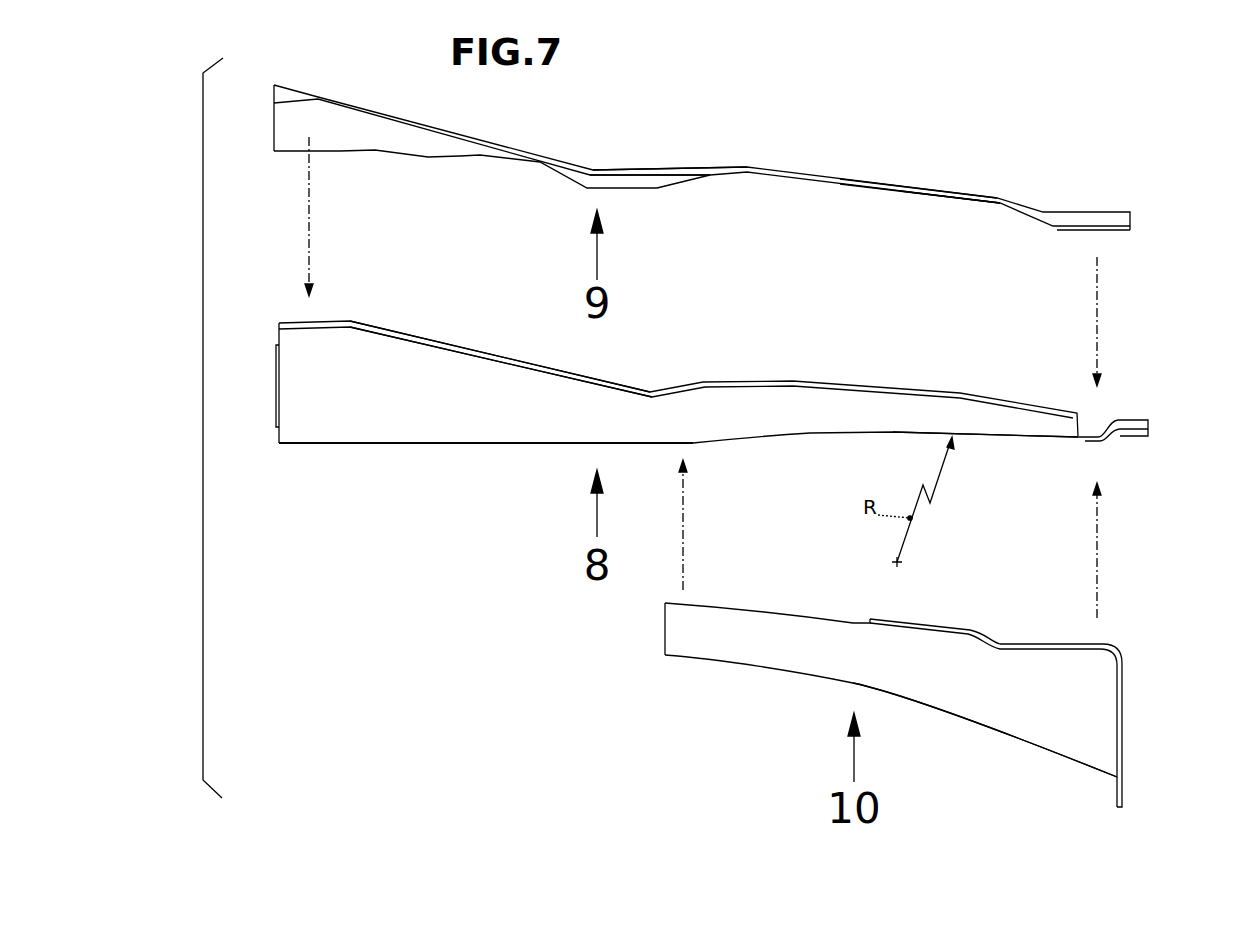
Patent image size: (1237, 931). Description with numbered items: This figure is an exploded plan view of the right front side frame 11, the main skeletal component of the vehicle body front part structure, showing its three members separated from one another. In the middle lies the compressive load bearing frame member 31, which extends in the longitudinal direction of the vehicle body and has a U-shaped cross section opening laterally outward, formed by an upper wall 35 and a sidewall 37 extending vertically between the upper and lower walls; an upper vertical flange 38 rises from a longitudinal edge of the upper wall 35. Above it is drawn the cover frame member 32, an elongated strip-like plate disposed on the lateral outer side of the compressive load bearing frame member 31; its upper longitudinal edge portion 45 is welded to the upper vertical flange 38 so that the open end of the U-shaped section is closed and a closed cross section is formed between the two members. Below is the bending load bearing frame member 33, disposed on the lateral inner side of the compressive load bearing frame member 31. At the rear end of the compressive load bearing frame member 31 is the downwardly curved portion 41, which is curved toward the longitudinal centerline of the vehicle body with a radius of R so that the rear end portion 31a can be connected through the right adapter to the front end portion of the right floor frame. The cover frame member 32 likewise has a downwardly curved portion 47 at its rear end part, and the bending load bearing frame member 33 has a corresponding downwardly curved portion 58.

The right front side frame 11 is at (1022, 99).
The compressive load bearing frame member 31 is at (772, 374).
The rear end portion 31a is at (1138, 436).
The cover frame member 32 is at (802, 160).
The bending load bearing frame member 33 is at (727, 672).
The upper wall 35 is at (387, 412).
The sidewall 37 is at (468, 445).
The upper vertical flange 38 is at (437, 338).
The downwardly curved portion 41 is at (998, 438).
The upper longitudinal edge portion 45 is at (638, 170).
The downwardly curved portion 47 is at (963, 200).
The downwardly curved portion 58 is at (957, 712).